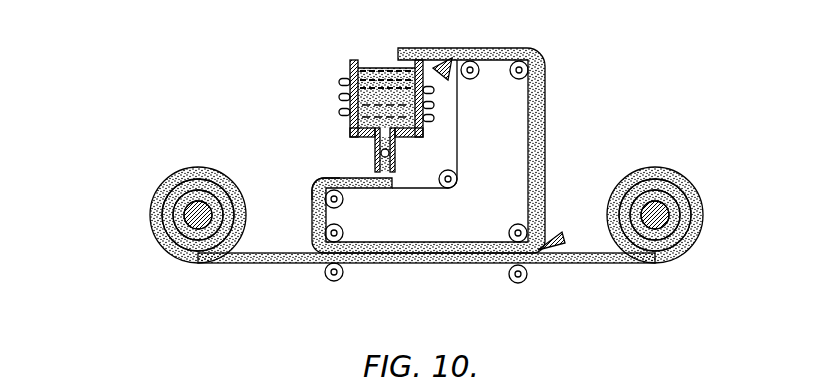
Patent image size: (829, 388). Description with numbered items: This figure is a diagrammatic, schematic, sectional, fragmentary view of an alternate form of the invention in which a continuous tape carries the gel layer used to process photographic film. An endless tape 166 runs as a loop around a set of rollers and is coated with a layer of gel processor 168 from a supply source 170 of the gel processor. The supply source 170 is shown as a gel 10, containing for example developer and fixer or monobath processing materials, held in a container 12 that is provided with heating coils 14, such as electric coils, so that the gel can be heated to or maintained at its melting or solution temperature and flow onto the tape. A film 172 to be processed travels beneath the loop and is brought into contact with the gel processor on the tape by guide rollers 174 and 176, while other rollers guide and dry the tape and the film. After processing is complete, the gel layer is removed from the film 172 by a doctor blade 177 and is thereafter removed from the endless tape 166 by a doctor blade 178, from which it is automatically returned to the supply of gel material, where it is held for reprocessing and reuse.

The gel 10 is at (376, 67).
The container 12 is at (352, 133).
The heating coils 14 is at (339, 81).
The endless tape 166 is at (458, 138).
The layer of gel processor 168 is at (326, 180).
The supply source 170 is at (363, 96).
The film 172 is at (249, 264).
The guide roller 174 is at (340, 266).
The guide roller 176 is at (512, 266).
The doctor blade 177 is at (567, 233).
The doctor blade 178 is at (441, 66).